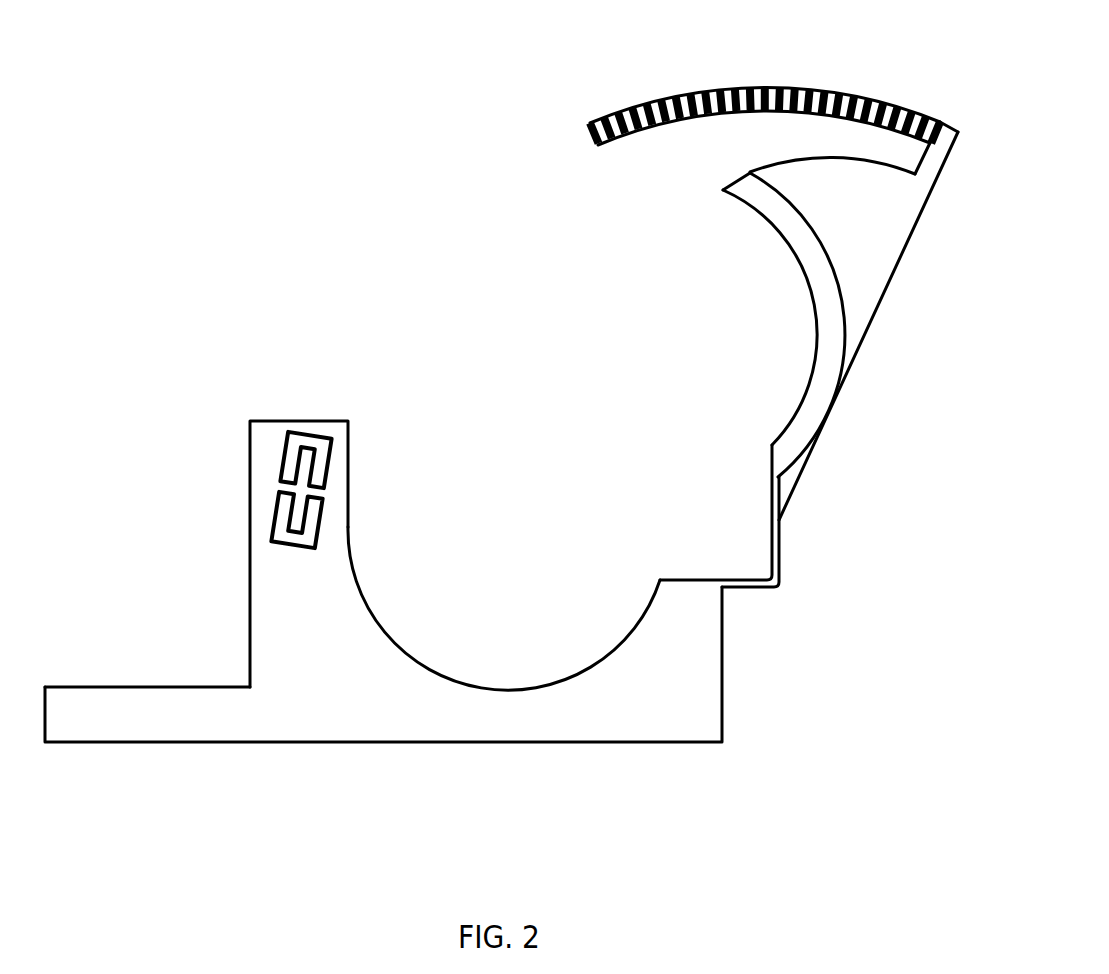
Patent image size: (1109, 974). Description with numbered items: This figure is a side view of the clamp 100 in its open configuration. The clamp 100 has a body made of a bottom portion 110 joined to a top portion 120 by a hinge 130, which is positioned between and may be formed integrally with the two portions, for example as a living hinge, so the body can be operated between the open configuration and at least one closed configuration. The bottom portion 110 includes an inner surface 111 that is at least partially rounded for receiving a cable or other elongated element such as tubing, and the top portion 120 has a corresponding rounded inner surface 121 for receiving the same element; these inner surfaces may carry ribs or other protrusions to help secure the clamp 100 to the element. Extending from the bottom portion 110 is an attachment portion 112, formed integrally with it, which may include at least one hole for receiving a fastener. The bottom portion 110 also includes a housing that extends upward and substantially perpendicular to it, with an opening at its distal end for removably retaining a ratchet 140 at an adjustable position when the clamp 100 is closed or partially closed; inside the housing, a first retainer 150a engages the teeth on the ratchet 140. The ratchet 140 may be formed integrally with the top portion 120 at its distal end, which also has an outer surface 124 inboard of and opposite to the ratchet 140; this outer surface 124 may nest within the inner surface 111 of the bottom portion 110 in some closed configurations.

The clamp 100 is at (381, 136).
The bottom portion 110 is at (672, 693).
The inner surface 111 is at (466, 687).
The attachment portion 112 is at (92, 687).
The top portion 120 is at (818, 395).
The inner surface 121 is at (812, 292).
The outer surface 124 is at (772, 163).
The hinge 130 is at (779, 571).
The ratchet 140 is at (610, 118).
The first retainer 150a is at (298, 487).